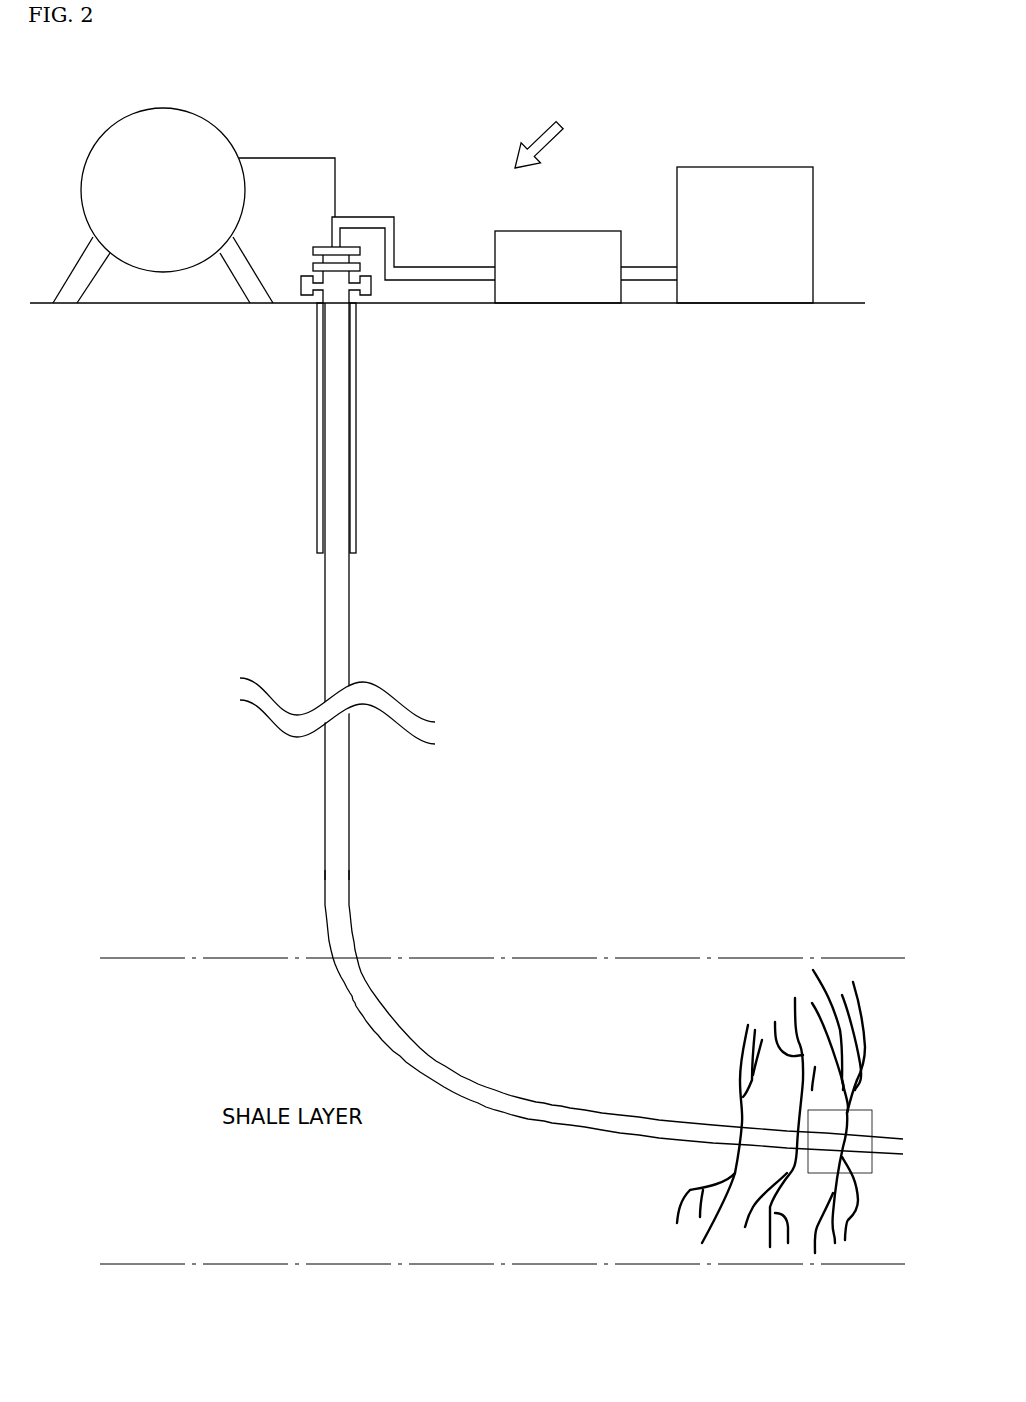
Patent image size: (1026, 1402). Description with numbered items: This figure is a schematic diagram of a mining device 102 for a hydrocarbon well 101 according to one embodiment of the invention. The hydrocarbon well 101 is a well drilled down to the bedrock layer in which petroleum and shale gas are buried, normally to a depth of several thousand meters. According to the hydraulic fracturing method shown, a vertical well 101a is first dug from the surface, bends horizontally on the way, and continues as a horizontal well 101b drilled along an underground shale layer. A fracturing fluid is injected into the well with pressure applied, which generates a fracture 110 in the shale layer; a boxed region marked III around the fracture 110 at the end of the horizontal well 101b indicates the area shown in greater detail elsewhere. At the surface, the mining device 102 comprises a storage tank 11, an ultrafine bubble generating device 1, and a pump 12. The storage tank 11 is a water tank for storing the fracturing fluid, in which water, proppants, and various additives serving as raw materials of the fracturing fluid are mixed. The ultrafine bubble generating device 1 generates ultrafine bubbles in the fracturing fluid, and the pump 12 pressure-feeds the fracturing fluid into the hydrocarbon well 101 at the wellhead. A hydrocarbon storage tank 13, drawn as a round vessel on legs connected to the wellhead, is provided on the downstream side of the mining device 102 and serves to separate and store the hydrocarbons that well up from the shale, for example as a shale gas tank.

The ultrafine bubble generating device 1 is at (570, 253).
The storage tank 11 is at (773, 182).
The pump 12 is at (350, 250).
The hydrocarbon storage tank 13 is at (207, 143).
The hydrocarbon well 101 is at (558, 728).
The vertical well 101a is at (327, 641).
The horizontal well 101b is at (550, 1103).
The mining device 102 is at (563, 134).
The fracture 110 is at (858, 1197).
The detail region III is at (873, 1110).